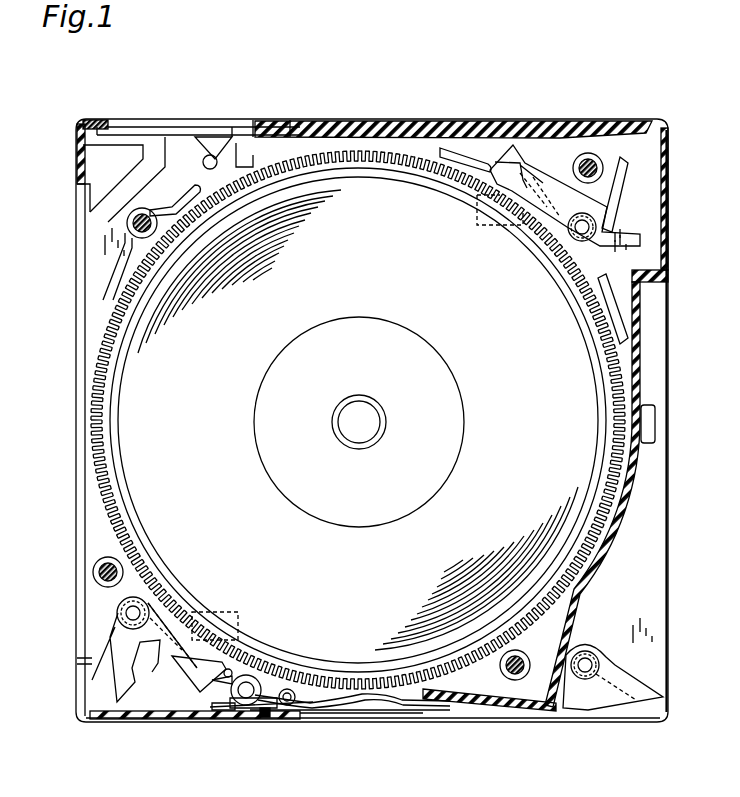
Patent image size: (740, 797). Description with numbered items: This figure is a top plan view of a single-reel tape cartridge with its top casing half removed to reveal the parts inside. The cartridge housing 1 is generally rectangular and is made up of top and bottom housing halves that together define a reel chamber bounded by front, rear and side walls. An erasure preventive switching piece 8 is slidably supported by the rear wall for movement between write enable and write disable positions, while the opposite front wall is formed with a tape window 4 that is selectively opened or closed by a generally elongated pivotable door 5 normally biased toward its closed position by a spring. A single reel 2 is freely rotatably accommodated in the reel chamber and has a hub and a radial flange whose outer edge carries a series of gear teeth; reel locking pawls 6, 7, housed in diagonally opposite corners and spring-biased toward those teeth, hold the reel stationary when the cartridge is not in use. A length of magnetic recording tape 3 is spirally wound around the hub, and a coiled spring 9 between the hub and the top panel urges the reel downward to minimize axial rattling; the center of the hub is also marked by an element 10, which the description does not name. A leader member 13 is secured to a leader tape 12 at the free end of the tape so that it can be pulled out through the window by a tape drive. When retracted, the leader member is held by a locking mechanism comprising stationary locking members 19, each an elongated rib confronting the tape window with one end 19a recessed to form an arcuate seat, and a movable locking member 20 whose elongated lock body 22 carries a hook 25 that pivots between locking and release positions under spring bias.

The cartridge housing 1 is at (358, 112).
The single reel 2 is at (588, 525).
The magnetic recording tape 3 is at (576, 532).
The tape window 4 is at (367, 702).
The pivotable door 5 is at (437, 712).
The reel locking pawl 6 is at (157, 654).
The reel locking pawl 7 is at (557, 195).
The erasure preventive switching piece 8 is at (160, 125).
The coiled spring 9 is at (345, 405).
The center hole 10 is at (356, 424).
The leader tape 12 is at (265, 676).
The leader member 13 is at (336, 710).
The stationary locking member 19 is at (397, 705).
The end of stationary locking member 19a is at (308, 697).
The movable locking member 20 is at (218, 694).
The lock body 22 is at (260, 708).
The hook 25 is at (288, 706).